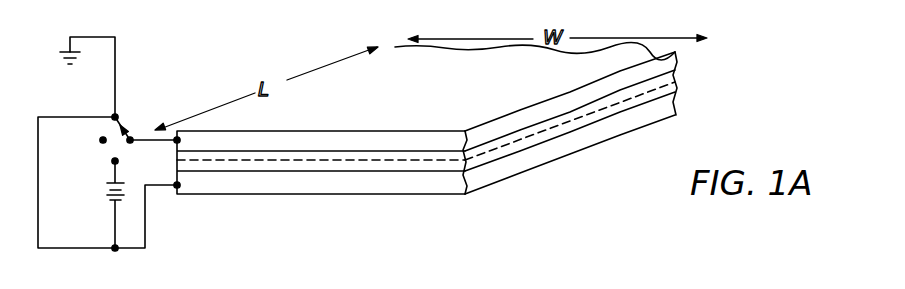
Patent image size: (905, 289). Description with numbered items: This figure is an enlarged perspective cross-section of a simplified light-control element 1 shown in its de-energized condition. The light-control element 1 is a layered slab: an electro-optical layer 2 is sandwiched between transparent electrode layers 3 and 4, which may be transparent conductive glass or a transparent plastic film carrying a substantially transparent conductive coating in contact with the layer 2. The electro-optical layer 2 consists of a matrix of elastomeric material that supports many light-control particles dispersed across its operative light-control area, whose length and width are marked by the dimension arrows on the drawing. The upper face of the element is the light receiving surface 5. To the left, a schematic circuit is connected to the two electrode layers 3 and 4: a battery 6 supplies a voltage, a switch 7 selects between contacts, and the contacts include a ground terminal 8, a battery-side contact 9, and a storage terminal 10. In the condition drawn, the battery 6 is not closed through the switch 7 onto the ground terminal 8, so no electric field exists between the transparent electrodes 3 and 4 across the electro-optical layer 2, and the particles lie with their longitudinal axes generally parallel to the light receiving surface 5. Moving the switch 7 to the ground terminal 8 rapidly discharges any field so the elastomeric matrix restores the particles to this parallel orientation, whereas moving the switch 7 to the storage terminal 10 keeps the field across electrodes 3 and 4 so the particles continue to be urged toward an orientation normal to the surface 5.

The light-control element 1 is at (702, 56).
The electro-optical layer 2 is at (570, 127).
The transparent electrode layer 3 is at (510, 128).
The transparent electrode layer 4 is at (623, 123).
The light receiving surface 5 is at (424, 90).
The battery 6 is at (100, 197).
The switch 7 is at (127, 127).
The ground terminal 8 is at (117, 115).
The battery terminal contact 9 is at (112, 161).
The storage terminal 10 is at (100, 140).